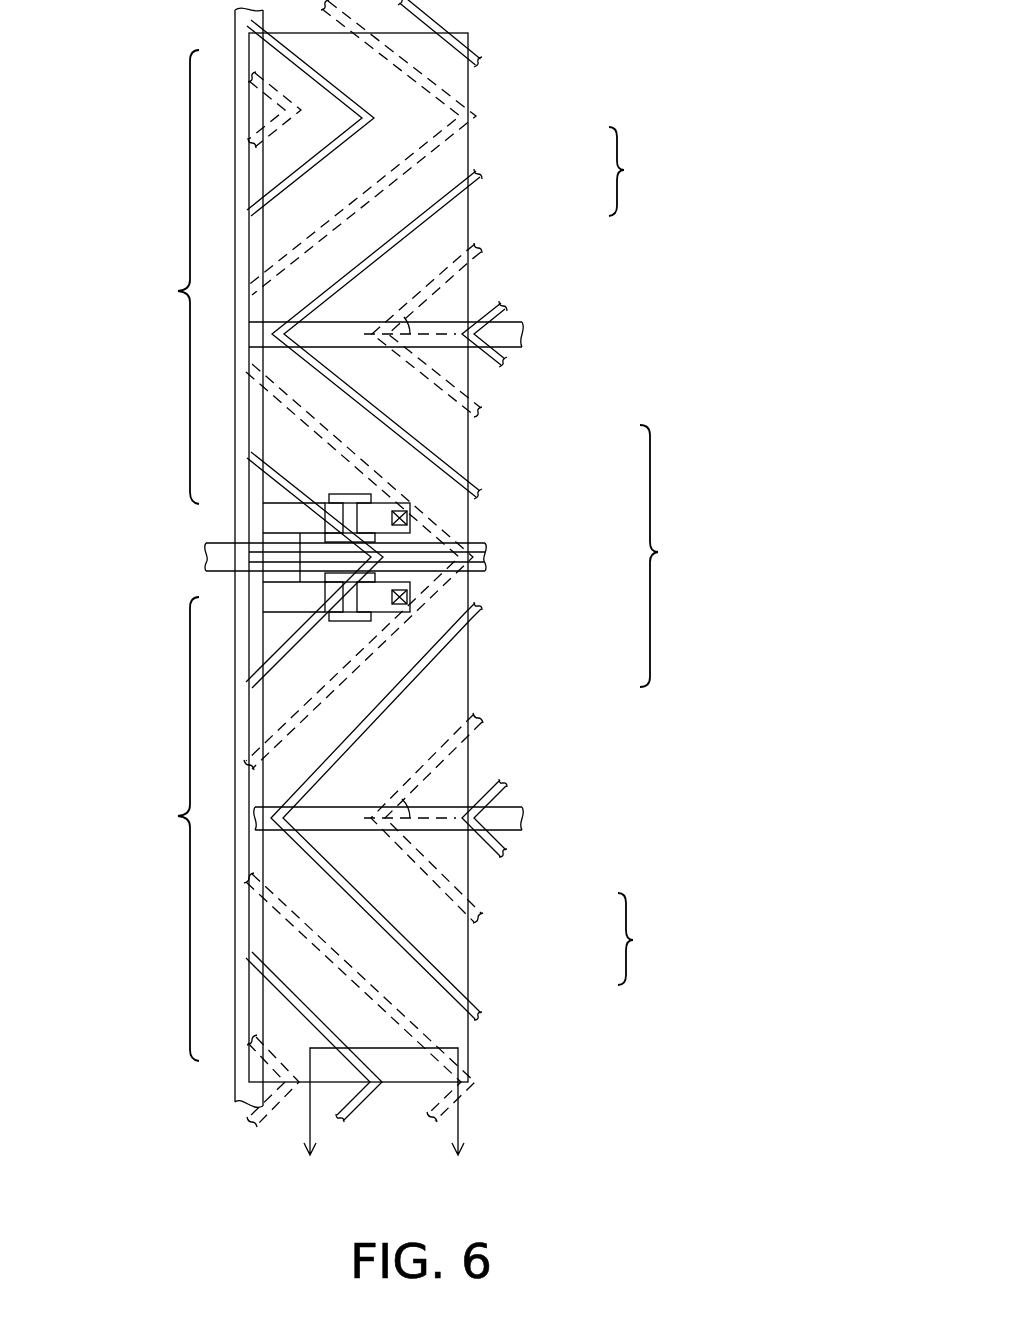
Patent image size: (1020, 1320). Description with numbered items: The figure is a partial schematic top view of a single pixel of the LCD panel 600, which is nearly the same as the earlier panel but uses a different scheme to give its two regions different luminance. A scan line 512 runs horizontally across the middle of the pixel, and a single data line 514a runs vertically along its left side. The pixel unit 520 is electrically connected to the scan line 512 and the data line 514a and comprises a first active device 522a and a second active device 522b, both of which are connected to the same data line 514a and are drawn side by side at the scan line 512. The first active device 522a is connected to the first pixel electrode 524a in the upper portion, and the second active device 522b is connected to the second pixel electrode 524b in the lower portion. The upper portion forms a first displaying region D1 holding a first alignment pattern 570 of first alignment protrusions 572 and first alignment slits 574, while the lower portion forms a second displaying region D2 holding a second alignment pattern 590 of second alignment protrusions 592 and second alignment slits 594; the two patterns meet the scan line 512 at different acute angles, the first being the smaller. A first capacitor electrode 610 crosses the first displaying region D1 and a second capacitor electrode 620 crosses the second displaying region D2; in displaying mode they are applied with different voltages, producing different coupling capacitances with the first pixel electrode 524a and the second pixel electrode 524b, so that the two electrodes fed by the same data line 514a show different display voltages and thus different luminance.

The LCD panel 600 is at (776, 1180).
The scan line 512 is at (219, 556).
The data line 514a is at (238, 1072).
The pixel unit 520 is at (483, 506).
The first active device 522a is at (353, 479).
The second active device 522b is at (355, 637).
The first pixel electrode 524a is at (468, 443).
The second pixel electrode 524b is at (468, 677).
The first alignment pattern 570 is at (459, 249).
The first alignment protrusions 572 is at (450, 198).
The first alignment slits 574 is at (417, 153).
The second alignment pattern 590 is at (476, 811).
The second alignment protrusions 592 is at (438, 980).
The second alignment slits 594 is at (468, 912).
The first capacitor electrode 610 is at (524, 331).
The second capacitor electrode 620 is at (524, 813).
The first displaying region D1 is at (169, 277).
The second displaying region D2 is at (169, 829).